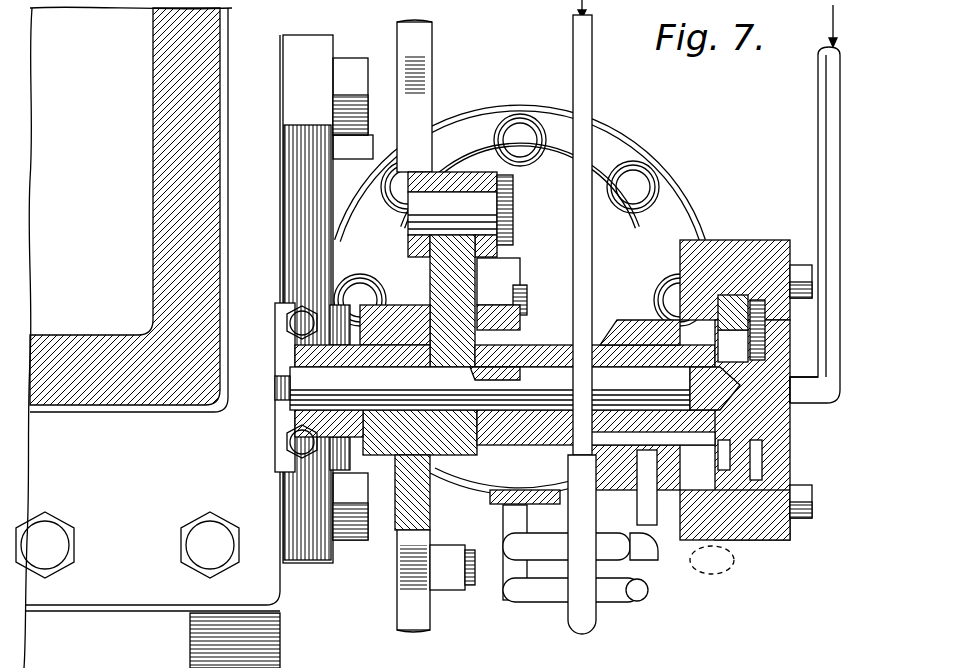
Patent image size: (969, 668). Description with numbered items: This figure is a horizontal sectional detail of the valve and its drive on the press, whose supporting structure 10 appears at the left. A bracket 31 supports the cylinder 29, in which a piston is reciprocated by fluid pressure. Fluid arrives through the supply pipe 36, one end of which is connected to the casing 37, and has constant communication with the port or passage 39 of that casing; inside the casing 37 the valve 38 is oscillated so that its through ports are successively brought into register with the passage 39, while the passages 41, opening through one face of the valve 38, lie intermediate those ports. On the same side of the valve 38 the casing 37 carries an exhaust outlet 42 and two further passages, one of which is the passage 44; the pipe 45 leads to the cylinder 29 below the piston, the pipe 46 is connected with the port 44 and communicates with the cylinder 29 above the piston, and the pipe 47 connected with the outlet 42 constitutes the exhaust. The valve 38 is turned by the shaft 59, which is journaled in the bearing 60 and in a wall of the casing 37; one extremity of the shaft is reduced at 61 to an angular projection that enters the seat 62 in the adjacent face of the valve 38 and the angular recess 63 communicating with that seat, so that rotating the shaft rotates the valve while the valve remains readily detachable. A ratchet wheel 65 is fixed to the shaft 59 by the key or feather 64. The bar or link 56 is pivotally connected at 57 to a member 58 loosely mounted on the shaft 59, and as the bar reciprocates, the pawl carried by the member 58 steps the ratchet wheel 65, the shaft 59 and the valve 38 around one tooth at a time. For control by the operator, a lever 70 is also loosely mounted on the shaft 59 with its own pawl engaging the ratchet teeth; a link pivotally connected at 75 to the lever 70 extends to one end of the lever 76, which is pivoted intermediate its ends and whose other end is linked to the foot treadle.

The supporting structure 10 is at (153, 218).
The bracket 31 is at (283, 157).
The cylinder 29 is at (458, 478).
The lever 76 is at (420, 92).
The bar or link 56 is at (432, 172).
The pivot connection 57 is at (513, 228).
The member 58 is at (445, 290).
The bearing 60 is at (300, 358).
The ratchet wheel 65 is at (562, 348).
The valve 38 is at (745, 240).
The casing 37 is at (790, 456).
The port or passage 39 is at (790, 482).
The seat 62 is at (735, 380).
The passages 41 is at (765, 330).
The shaft 59 is at (290, 390).
The key or feather 64 is at (470, 375).
The reduced angular projection 61 is at (690, 386).
The pipe 45 is at (555, 598).
The exhaust outlet 42 is at (625, 475).
The pipe 46 is at (645, 560).
The passage or port 44 is at (712, 560).
The exhaust pipe 47 is at (590, 108).
The supply pipe 36 is at (818, 145).
The recess 63 is at (790, 400).
The lever 70 is at (400, 552).
The pivot connection 75 is at (470, 590).